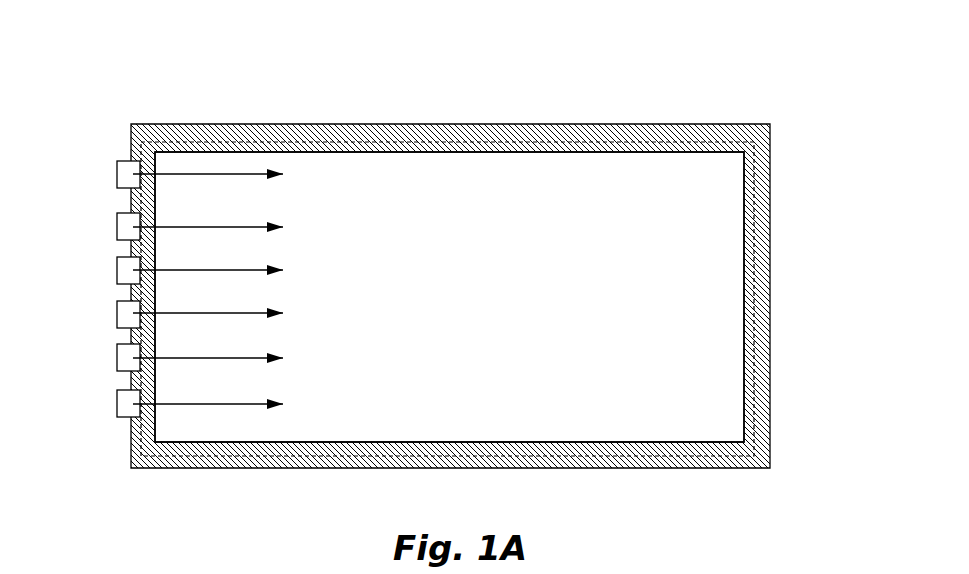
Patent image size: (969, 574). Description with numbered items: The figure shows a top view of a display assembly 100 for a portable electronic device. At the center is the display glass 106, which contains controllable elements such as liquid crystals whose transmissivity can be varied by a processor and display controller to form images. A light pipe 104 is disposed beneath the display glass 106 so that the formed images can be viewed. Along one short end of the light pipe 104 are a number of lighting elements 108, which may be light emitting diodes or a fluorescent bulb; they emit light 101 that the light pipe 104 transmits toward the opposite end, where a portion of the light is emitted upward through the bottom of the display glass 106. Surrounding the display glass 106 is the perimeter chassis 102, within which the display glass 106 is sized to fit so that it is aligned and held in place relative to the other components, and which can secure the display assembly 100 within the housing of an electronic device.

The display assembly 100 is at (414, 293).
The light 101 is at (273, 270).
The perimeter chassis 102 is at (493, 85).
The light pipe 104 is at (620, 147).
The display glass 106 is at (613, 388).
The lighting elements 108 is at (117, 187).